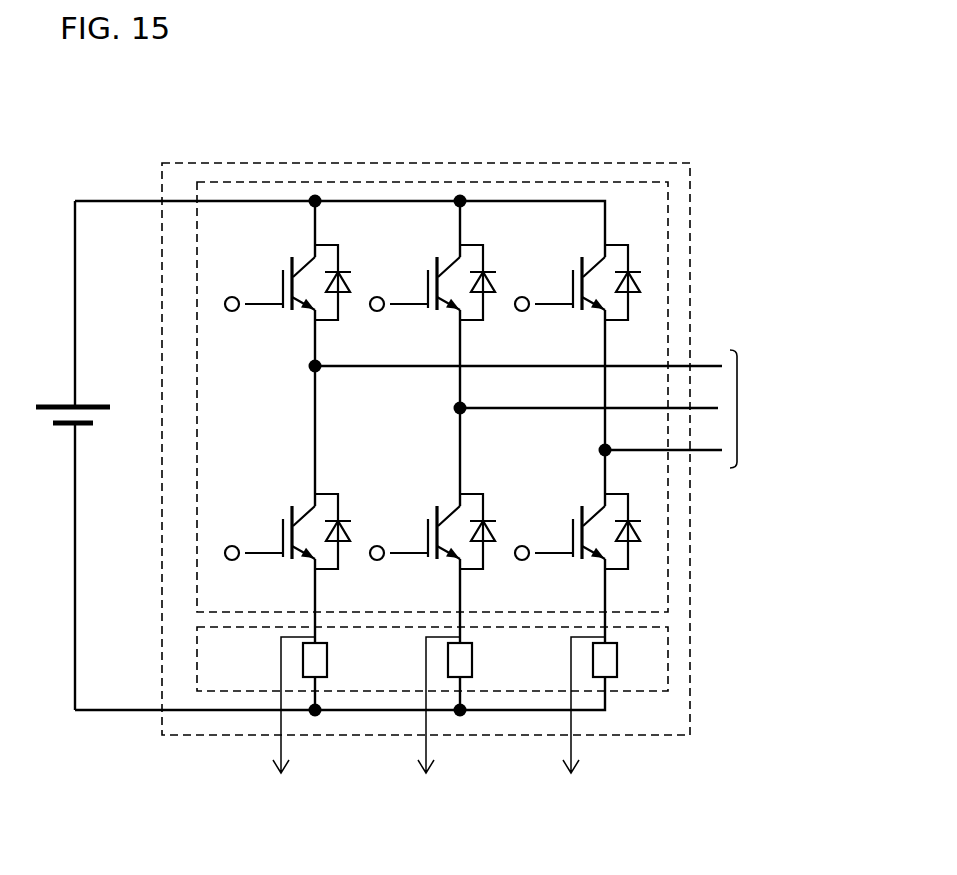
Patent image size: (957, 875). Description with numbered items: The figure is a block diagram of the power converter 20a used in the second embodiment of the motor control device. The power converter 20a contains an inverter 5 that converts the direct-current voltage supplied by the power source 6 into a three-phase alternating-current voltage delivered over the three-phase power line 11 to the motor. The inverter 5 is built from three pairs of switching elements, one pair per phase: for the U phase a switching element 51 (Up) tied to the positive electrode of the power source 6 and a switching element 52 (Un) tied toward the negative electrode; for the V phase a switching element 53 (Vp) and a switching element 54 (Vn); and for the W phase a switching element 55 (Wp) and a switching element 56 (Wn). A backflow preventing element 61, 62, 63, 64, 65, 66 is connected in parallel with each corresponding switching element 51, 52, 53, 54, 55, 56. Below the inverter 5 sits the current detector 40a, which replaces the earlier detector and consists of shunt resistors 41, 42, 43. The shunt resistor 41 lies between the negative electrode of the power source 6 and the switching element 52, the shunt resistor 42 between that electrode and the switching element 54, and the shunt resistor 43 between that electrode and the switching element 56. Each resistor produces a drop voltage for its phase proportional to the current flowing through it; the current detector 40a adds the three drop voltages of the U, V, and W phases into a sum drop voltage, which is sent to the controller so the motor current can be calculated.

The power converter 20a is at (692, 183).
The inverter 5 is at (668, 251).
The power source 6 is at (55, 403).
The three-phase power line 11 is at (738, 407).
The current detector 40a is at (668, 662).
The shunt resistor 41 is at (328, 667).
The shunt resistor 42 is at (473, 667).
The shunt resistor 43 is at (618, 667).
The switching element 51 is at (280, 310).
The switching element 52 is at (274, 560).
The switching element 53 is at (425, 310).
The switching element 54 is at (419, 560).
The switching element 55 is at (568, 310).
The switching element 56 is at (570, 560).
The backflow preventing element 61 is at (342, 269).
The backflow preventing element 62 is at (341, 519).
The backflow preventing element 63 is at (486, 269).
The backflow preventing element 64 is at (486, 519).
The backflow preventing element 65 is at (630, 269).
The backflow preventing element 66 is at (630, 519).